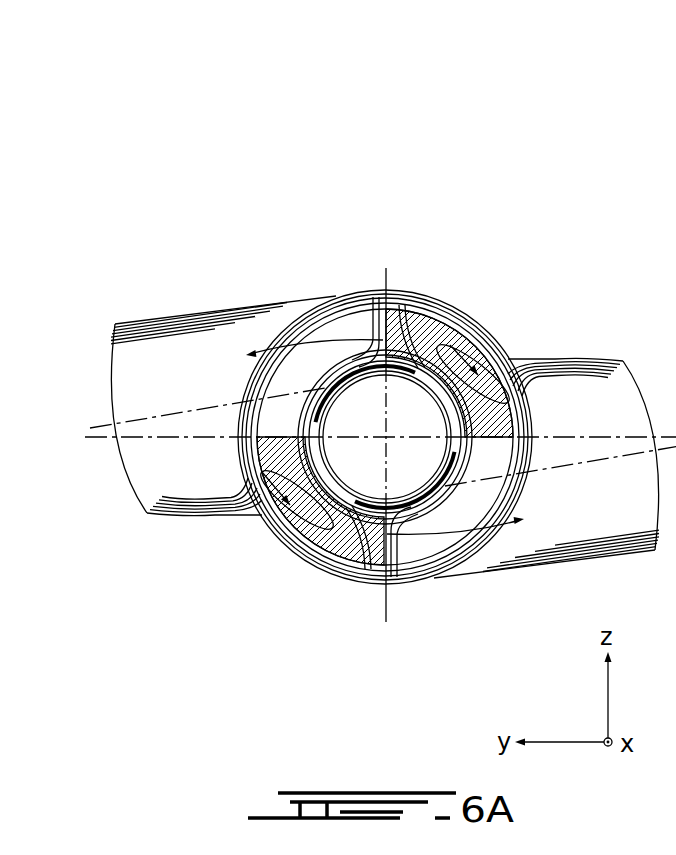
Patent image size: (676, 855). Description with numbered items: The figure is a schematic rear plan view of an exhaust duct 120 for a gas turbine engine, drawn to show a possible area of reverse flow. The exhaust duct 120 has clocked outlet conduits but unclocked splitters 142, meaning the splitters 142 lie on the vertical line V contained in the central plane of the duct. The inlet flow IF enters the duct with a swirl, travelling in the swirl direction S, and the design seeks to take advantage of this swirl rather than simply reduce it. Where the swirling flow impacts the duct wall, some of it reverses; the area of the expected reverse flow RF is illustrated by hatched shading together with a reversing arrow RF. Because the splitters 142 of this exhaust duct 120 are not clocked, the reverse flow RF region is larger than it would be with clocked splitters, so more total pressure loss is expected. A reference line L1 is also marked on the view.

The exhaust duct 120 is at (303, 247).
The splitters 142 is at (401, 312).
The swirl direction S is at (330, 397).
The reverse flow RF is at (468, 347).
The inlet flow IF is at (287, 300).
The section line L1 is at (385, 281).
The vertical line V is at (386, 600).